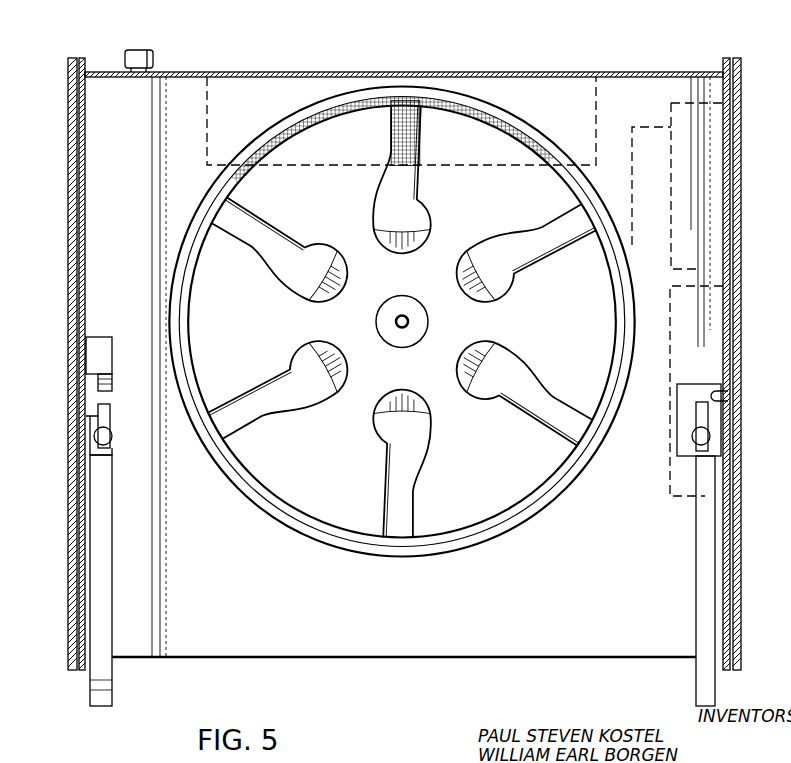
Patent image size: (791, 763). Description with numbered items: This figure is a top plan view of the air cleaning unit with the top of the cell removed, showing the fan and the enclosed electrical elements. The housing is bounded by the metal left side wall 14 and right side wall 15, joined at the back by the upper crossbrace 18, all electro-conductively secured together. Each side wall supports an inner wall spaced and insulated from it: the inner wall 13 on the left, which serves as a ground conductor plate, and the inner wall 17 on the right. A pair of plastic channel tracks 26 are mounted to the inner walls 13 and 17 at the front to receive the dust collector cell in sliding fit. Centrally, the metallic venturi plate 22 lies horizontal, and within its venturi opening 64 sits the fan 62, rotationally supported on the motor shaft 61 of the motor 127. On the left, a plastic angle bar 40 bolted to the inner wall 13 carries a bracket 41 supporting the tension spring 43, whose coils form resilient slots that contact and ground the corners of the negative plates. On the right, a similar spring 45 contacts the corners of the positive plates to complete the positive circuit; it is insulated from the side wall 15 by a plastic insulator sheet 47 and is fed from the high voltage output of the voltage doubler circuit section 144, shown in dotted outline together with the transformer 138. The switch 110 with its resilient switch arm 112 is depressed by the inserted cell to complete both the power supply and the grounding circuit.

The inner wall 13 is at (86, 250).
The side wall 14 is at (68, 250).
The side wall 15 is at (735, 277).
The inner wall 17 is at (728, 233).
The upper crossbrace 18 is at (512, 73).
The venturi plate 22 is at (520, 604).
The plastic channel tracks 26 is at (105, 545).
The plastic angle bar 40 is at (96, 411).
The bracket 41 is at (110, 421).
The spring 43 is at (112, 437).
The spring 45 is at (692, 436).
The plastic insulator sheet 47 is at (728, 398).
The motor shaft 61 is at (409, 322).
The fan 62 is at (491, 202).
The venturi opening 64 is at (510, 490).
The switch 110 is at (90, 360).
The switch arm 112 is at (112, 386).
The motor 127 is at (524, 250).
The transformer 138 is at (718, 193).
The voltage doubler circuit section 144 is at (713, 323).